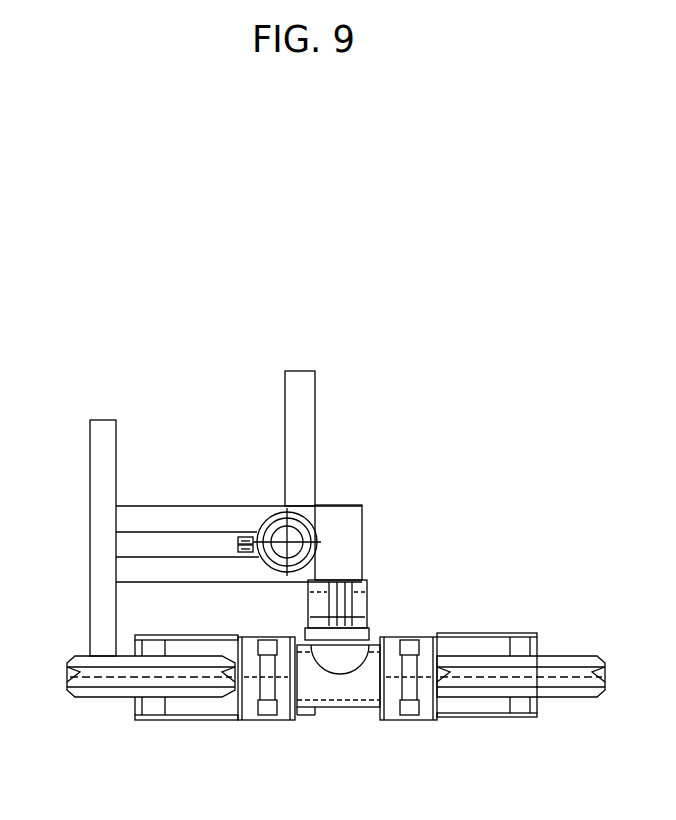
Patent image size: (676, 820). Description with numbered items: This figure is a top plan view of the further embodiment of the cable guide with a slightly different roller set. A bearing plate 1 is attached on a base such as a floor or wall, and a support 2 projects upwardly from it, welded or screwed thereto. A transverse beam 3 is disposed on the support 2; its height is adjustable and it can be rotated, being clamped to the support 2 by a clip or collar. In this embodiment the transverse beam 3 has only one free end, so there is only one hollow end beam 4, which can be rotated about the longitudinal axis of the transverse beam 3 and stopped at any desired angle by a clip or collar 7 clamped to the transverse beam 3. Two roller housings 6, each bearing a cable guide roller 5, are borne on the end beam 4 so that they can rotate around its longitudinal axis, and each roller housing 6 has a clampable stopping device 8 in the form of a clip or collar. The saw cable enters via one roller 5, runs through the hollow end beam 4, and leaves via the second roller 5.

The bearing plate 1 is at (77, 507).
The support 2 is at (316, 473).
The transverse beam 3 is at (411, 504).
The hollow end beam 4 is at (362, 716).
The cable guide roller 5 is at (342, 620).
The roller housing 6 is at (297, 695).
The clip or collar 7 is at (406, 556).
The clampable stopping device 8 is at (392, 710).